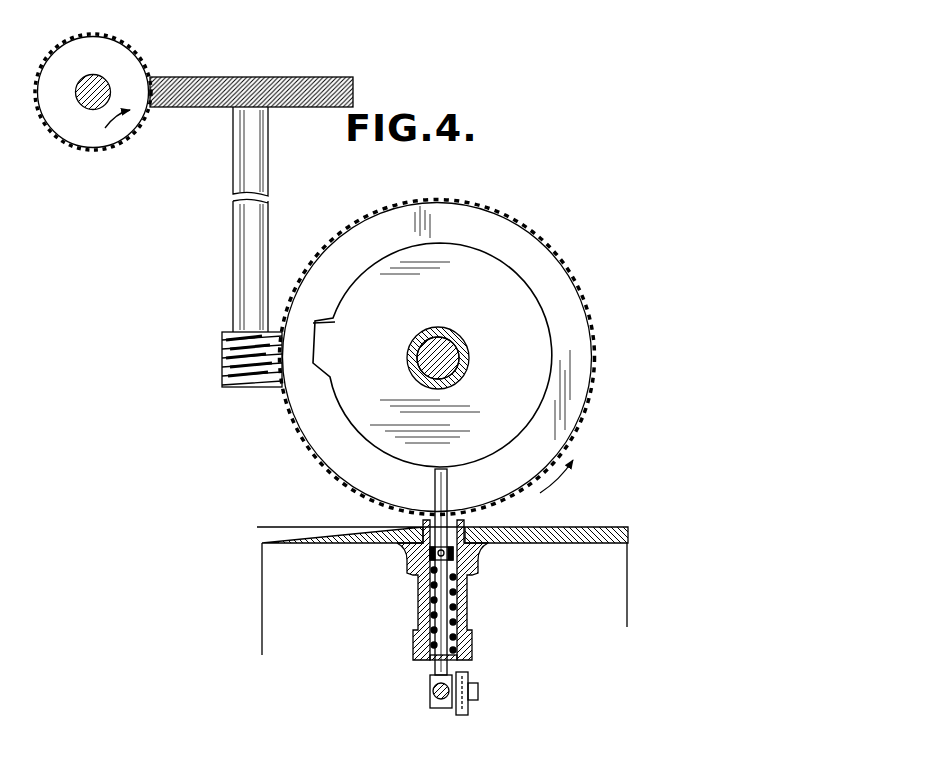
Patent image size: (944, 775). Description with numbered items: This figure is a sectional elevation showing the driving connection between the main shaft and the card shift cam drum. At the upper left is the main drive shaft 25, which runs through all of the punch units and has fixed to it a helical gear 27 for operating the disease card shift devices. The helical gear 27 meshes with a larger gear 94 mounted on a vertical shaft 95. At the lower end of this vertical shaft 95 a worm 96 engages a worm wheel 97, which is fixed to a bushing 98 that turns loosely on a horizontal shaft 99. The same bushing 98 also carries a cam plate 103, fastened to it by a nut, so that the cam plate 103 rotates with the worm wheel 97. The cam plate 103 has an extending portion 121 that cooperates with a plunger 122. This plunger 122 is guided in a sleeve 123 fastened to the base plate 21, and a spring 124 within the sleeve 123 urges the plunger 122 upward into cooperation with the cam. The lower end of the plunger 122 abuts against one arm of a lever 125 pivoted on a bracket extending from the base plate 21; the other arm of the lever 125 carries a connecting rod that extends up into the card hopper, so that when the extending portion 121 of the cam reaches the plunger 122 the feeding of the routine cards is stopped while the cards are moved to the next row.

The base 21 is at (577, 544).
The main drive shaft 25 is at (90, 80).
The helical gear 27 is at (140, 61).
The gear 94 is at (328, 77).
The vertical shaft 95 is at (248, 243).
The worm 96 is at (222, 374).
The worm wheel 97 is at (548, 263).
The bushing 98 is at (469, 355).
The horizontal shaft 99 is at (444, 347).
The cam plate 103 is at (530, 388).
The extending portion 121 is at (316, 320).
The plunger 122 is at (449, 503).
The sleeve 123 is at (468, 608).
The spring 124 is at (425, 606).
The lever 125 is at (443, 707).